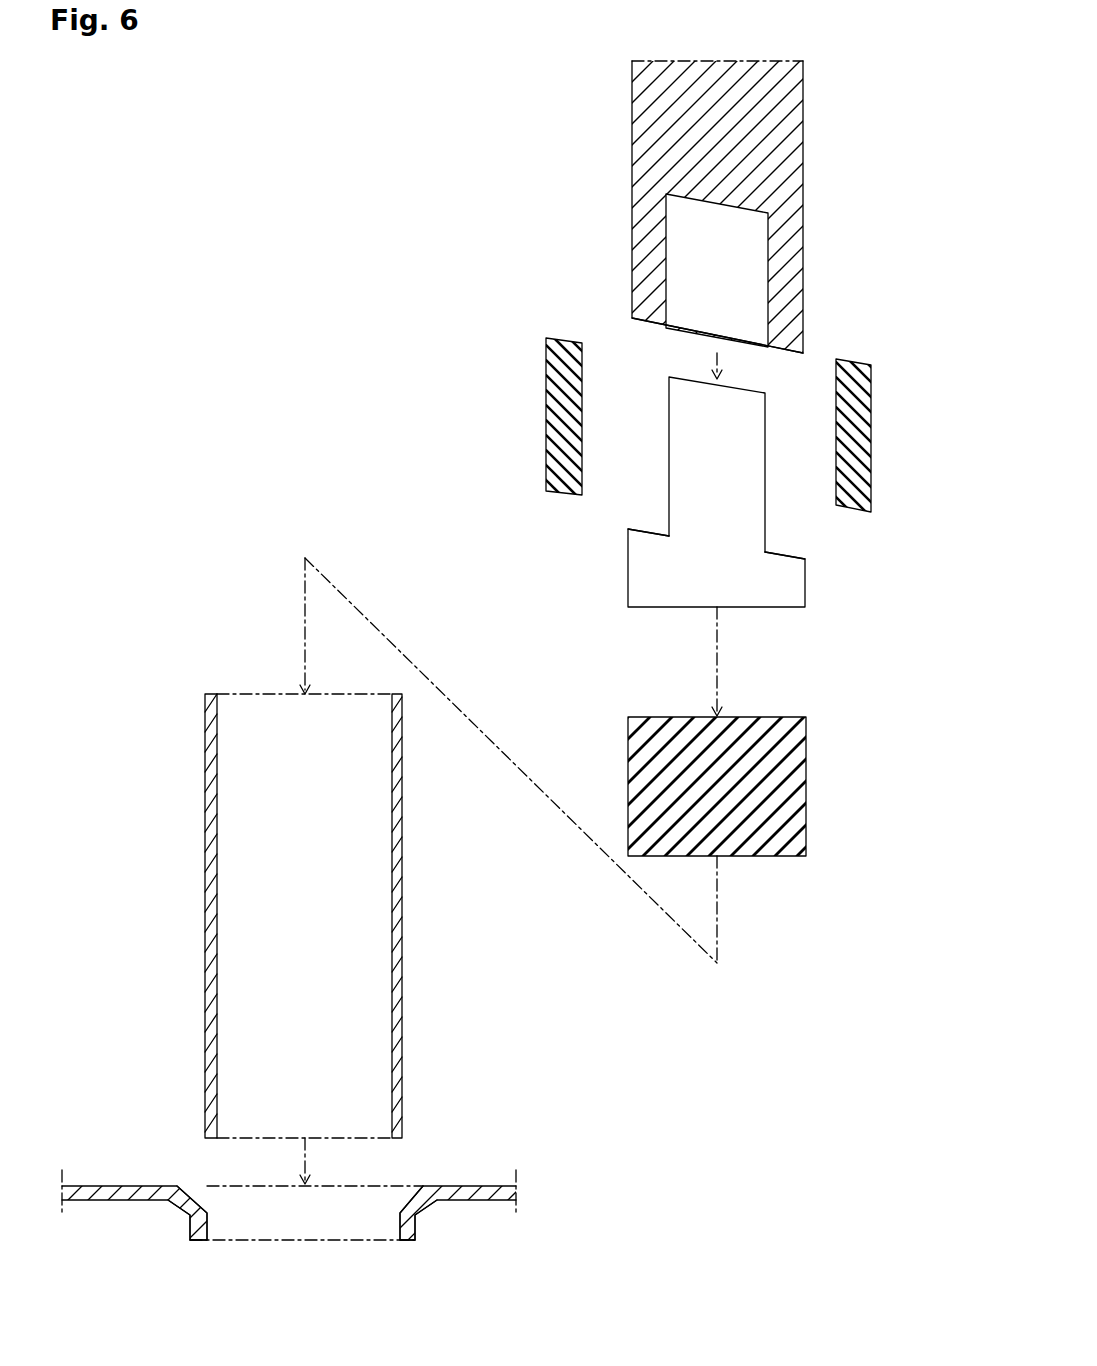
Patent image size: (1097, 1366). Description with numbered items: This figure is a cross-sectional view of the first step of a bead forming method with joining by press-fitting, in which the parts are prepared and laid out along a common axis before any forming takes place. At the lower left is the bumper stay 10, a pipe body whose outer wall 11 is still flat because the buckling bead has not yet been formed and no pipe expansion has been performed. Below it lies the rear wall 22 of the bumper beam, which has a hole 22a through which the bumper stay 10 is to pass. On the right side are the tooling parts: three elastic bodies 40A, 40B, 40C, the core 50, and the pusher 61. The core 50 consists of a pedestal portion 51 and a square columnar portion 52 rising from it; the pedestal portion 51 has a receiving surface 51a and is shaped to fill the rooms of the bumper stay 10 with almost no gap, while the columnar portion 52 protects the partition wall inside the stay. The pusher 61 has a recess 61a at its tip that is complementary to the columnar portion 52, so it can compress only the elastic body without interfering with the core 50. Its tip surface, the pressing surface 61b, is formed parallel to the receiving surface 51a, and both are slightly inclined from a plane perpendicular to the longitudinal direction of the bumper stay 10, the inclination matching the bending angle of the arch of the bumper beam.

The bumper stay 10 is at (303, 916).
The outer wall 11 is at (403, 851).
The rear wall 22 is at (140, 1186).
The hole 22a is at (380, 1240).
The elastic body 40A is at (546, 377).
The elastic body 40B is at (873, 390).
The elastic body 40C is at (806, 745).
The core 50 is at (761, 527).
The pedestal portion 51 is at (806, 583).
The receiving surface 51a is at (650, 531).
The columnar portion 52 is at (669, 424).
The pusher 61 is at (803, 101).
The recess 61a is at (740, 240).
The pressing surface 61b is at (788, 350).